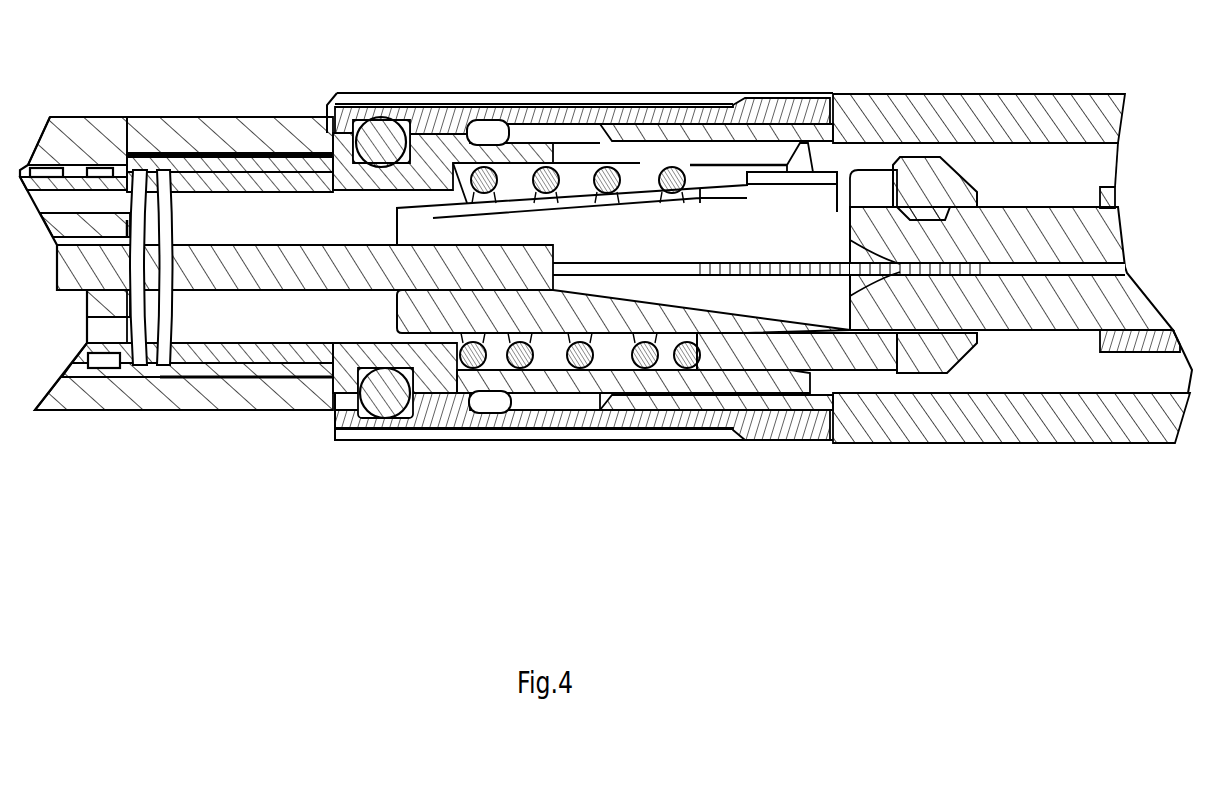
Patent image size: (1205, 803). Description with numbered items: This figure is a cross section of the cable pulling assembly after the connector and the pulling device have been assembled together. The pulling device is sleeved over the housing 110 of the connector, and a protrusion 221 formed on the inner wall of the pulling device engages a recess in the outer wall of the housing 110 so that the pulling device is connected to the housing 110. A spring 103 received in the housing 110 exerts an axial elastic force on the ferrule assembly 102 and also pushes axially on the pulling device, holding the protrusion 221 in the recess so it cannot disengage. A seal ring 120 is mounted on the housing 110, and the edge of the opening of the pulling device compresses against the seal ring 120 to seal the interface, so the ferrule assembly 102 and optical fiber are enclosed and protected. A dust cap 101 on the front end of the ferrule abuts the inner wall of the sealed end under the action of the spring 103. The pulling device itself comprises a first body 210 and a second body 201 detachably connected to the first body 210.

The dust cap 101 is at (1160, 345).
The ferrule assembly 102 is at (1030, 318).
The spring 103 is at (580, 360).
The housing 110 is at (440, 380).
The seal ring 120 is at (490, 133).
The second body 201 is at (1107, 425).
The first body 210 is at (524, 400).
The protrusion 221 is at (440, 133).